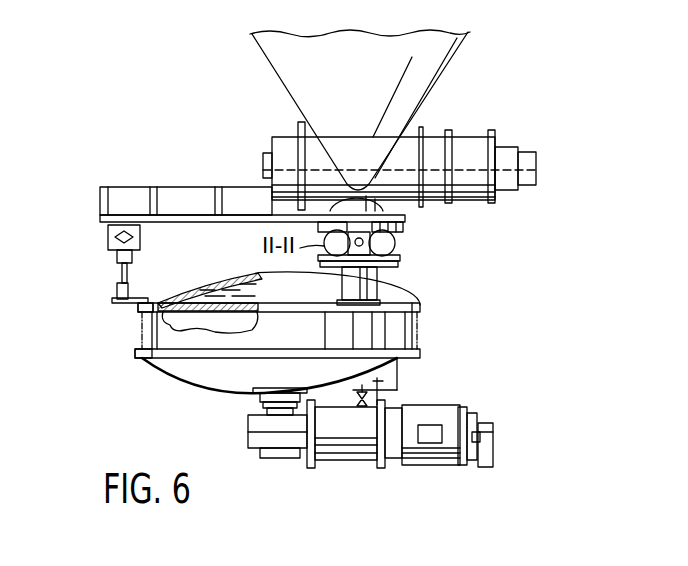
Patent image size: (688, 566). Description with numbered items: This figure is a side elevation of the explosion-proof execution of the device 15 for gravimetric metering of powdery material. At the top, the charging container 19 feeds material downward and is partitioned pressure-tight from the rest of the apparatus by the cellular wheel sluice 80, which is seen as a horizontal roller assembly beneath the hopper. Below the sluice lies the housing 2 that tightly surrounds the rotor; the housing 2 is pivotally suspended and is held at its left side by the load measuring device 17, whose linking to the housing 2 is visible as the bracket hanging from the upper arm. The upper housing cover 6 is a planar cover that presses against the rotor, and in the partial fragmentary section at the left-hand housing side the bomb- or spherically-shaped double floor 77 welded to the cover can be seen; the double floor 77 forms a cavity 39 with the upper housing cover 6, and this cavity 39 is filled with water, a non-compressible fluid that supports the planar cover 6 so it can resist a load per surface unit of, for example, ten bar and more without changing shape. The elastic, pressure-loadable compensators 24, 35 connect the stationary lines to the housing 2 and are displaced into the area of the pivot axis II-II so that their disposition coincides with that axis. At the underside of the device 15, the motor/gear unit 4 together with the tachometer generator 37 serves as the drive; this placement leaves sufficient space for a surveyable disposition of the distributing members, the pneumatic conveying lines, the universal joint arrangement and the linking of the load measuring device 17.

The charging container 19 is at (394, 89).
The cellular wheel sluice 80 is at (427, 143).
The load measuring device 17 is at (110, 241).
The double floor 77 is at (201, 284).
The cavity 39 is at (238, 277).
The compensator 24 is at (394, 245).
The compensator 35 is at (394, 253).
The upper housing cover 6 is at (305, 325).
The housing 2 is at (247, 346).
The device 15 is at (128, 357).
The tachometer generator 37 is at (487, 423).
The motor/gear unit 4 is at (327, 468).